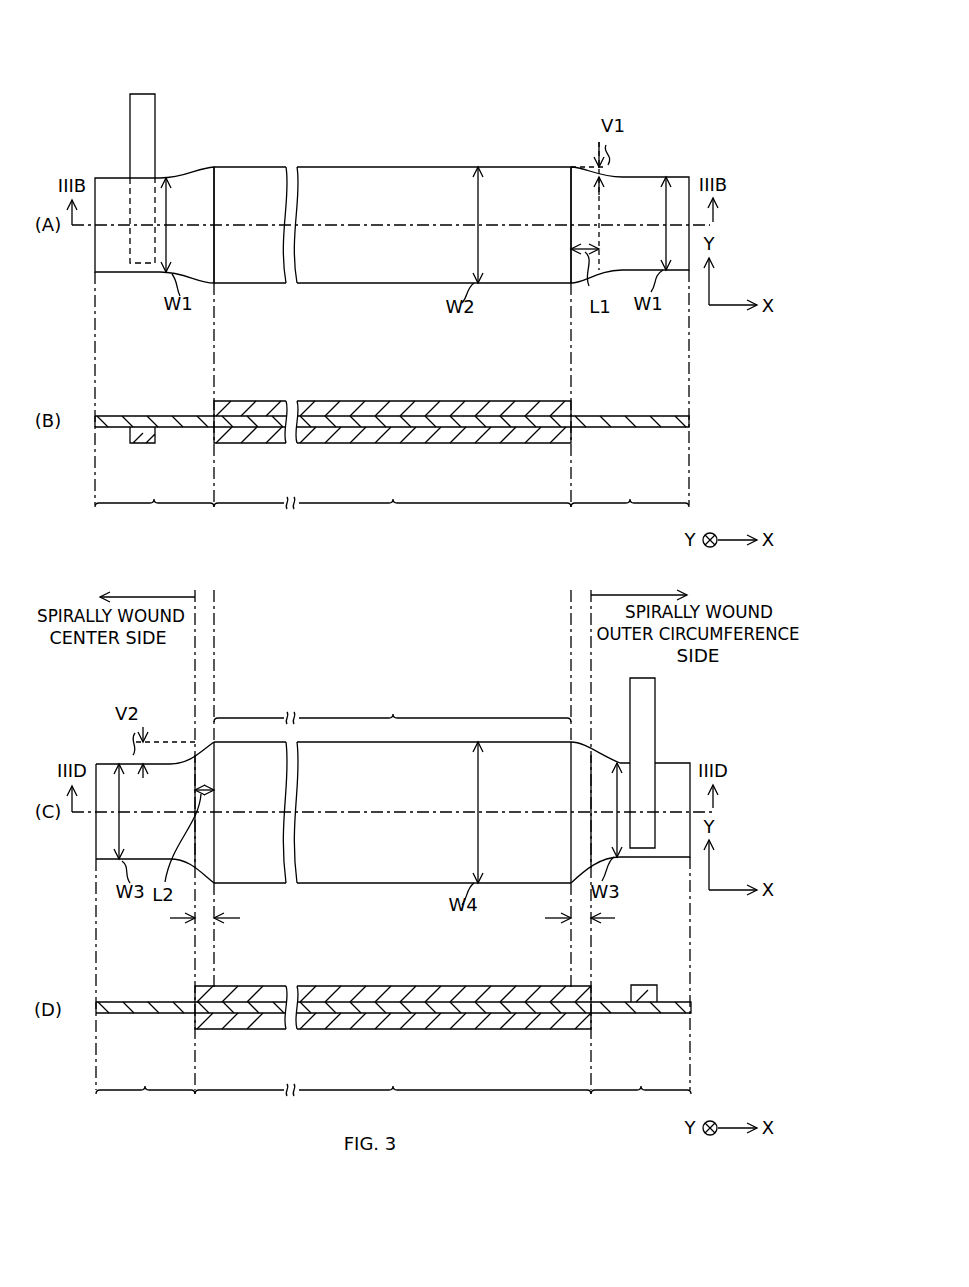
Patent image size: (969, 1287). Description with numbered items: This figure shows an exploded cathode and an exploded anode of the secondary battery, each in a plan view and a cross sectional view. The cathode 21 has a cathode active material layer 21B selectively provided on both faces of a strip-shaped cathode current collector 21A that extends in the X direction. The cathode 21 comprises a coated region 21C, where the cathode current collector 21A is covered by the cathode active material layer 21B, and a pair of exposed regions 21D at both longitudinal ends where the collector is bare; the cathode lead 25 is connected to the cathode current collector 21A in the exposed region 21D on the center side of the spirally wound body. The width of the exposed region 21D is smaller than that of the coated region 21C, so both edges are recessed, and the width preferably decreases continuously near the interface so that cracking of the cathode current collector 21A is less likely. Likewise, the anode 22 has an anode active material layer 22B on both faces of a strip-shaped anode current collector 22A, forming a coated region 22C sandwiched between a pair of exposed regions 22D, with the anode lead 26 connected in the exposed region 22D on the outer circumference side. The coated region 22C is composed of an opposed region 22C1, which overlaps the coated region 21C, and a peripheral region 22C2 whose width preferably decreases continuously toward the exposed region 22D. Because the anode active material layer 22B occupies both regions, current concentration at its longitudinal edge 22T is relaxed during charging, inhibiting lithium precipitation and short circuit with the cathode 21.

The cathode 21 is at (650, 111).
The cathode current collector 21A is at (640, 177).
The cathode active material layer 21B is at (506, 167).
The coated region 21C is at (392, 515).
The exposed regions 21D is at (392, 516).
The cathode lead 25 is at (150, 134).
The anode 22 is at (672, 702).
The anode current collector 22A is at (668, 858).
The anode active material layer 22B is at (383, 883).
The coated region 22C is at (393, 1102).
The opposed region 22C1 is at (392, 706).
The peripheral region 22C2 is at (207, 921).
The exposed regions 22D is at (393, 1103).
The edge 22T is at (193, 758).
The anode lead 26 is at (649, 721).